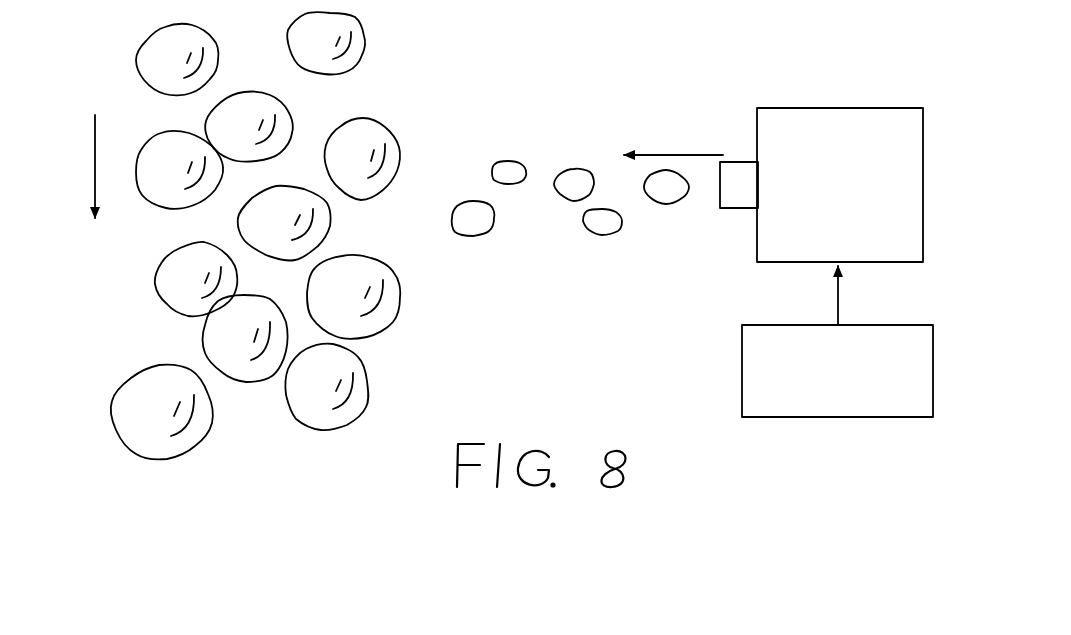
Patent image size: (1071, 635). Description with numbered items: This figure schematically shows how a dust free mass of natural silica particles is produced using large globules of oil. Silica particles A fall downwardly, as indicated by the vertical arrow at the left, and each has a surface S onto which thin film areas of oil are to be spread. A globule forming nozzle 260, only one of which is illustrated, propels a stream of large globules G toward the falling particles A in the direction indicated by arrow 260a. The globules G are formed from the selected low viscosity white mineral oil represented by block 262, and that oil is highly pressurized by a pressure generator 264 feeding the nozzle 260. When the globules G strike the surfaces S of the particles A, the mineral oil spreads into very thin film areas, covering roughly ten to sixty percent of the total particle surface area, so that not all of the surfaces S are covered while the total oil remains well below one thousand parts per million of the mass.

The silica particles A is at (390, 120).
The surface of particles S is at (156, 433).
The large globules G is at (572, 173).
The globule forming nozzle 260 is at (733, 208).
The arrow 260a is at (660, 152).
The selected white mineral oil block 262 is at (833, 108).
The pressure generator 264 is at (823, 417).